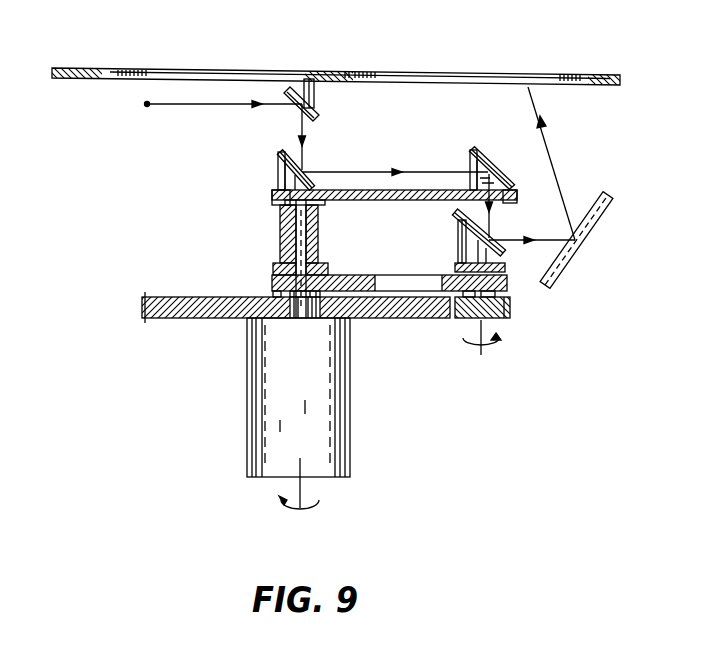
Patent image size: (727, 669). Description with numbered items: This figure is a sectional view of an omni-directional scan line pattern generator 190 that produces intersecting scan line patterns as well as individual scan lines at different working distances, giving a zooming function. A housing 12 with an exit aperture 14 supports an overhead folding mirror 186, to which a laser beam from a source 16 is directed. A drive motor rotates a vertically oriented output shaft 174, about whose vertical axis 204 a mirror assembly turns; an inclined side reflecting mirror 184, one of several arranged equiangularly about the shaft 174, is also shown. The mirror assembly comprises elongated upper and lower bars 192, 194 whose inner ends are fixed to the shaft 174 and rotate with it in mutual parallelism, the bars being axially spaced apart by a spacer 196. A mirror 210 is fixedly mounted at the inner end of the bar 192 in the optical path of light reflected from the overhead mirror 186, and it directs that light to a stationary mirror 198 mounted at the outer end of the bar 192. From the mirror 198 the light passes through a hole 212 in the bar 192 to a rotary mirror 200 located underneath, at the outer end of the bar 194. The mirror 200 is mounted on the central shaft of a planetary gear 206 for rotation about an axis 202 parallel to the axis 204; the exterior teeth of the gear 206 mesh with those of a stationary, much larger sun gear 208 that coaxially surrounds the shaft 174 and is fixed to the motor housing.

The housing 12 is at (304, 68).
The exit aperture 14 is at (353, 70).
The source 16 is at (147, 107).
The output shaft 174 is at (290, 296).
The inclined side reflecting mirror 184 is at (591, 227).
The overhead folding mirror 186 is at (316, 108).
The omni-directional scan line pattern generator 190 is at (156, 251).
The upper bar 192 is at (392, 201).
The lower bar 194 is at (360, 284).
The spacer 196 is at (280, 226).
The stationary mirror 198 is at (524, 162).
The rotary mirror 200 is at (504, 251).
The axis 202 is at (463, 330).
The vertical axis 204 is at (306, 493).
The planetary gear 206 is at (495, 320).
The sun gear 208 is at (378, 320).
The mirror 210 is at (278, 158).
The hole 212 is at (497, 200).